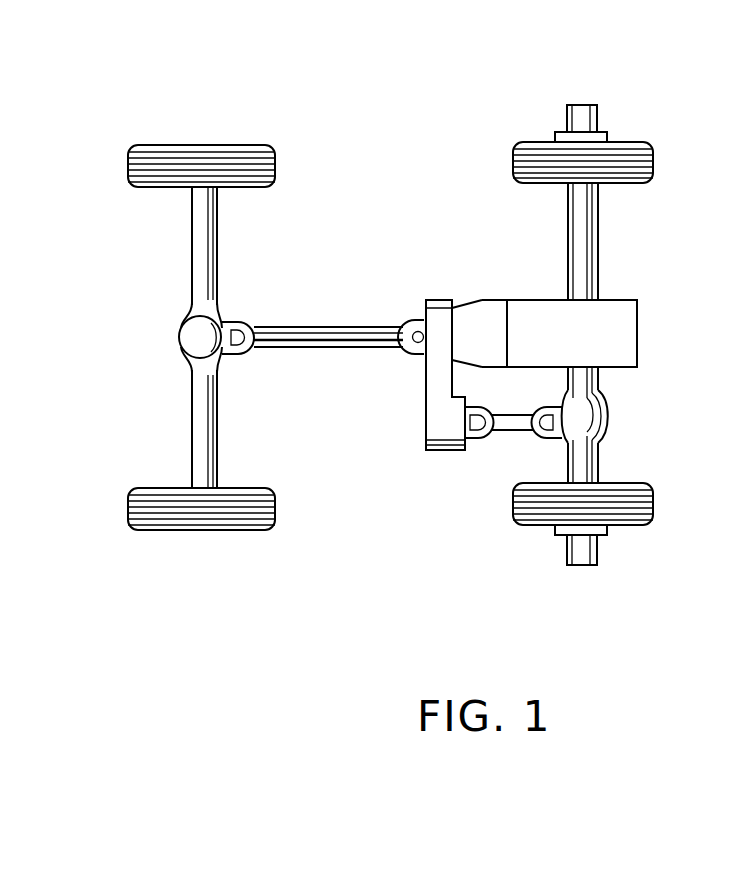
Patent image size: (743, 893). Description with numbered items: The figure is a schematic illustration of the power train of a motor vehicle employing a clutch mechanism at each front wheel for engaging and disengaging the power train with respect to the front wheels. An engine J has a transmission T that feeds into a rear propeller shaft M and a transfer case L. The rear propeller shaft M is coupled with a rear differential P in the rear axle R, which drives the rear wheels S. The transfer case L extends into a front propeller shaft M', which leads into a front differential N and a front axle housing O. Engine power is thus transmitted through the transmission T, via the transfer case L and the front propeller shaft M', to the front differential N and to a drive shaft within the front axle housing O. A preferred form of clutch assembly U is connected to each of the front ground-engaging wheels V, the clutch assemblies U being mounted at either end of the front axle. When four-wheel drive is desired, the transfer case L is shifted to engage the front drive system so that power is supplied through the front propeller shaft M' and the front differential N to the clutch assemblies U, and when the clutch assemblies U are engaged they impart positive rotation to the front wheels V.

The rear wheels S is at (190, 150).
The rear axle R is at (205, 258).
The rear differential P is at (200, 334).
The rear propeller shaft M is at (339, 316).
The transfer case L is at (436, 440).
The transmission T is at (479, 312).
The engine J is at (617, 333).
The front propeller shaft M' is at (513, 441).
The front differential N is at (596, 422).
The front axle housing O is at (578, 242).
The clutch assembly U is at (580, 115).
The front wheels V is at (640, 143).